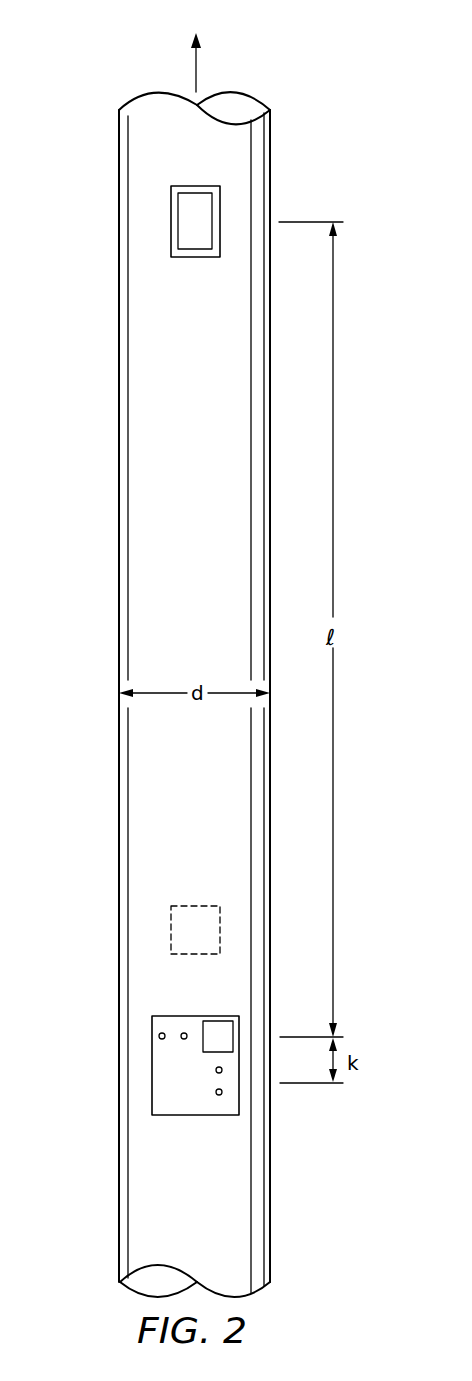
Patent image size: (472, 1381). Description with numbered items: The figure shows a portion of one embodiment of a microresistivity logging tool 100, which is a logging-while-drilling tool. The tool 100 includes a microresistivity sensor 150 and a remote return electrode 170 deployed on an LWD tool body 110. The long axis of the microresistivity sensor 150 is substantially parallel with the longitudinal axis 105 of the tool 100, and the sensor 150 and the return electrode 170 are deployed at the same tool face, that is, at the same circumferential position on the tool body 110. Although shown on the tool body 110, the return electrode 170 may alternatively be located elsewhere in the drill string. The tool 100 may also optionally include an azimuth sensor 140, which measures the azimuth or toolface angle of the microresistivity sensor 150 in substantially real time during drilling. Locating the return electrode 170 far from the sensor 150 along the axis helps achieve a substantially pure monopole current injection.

The logging tool 100 is at (258, 56).
The longitudinal axis 105 is at (193, 68).
The LWD tool body 110 is at (119, 545).
The azimuth sensor 140 is at (171, 940).
The microresistivity sensor 150 is at (172, 1073).
The return electrode 170 is at (178, 222).